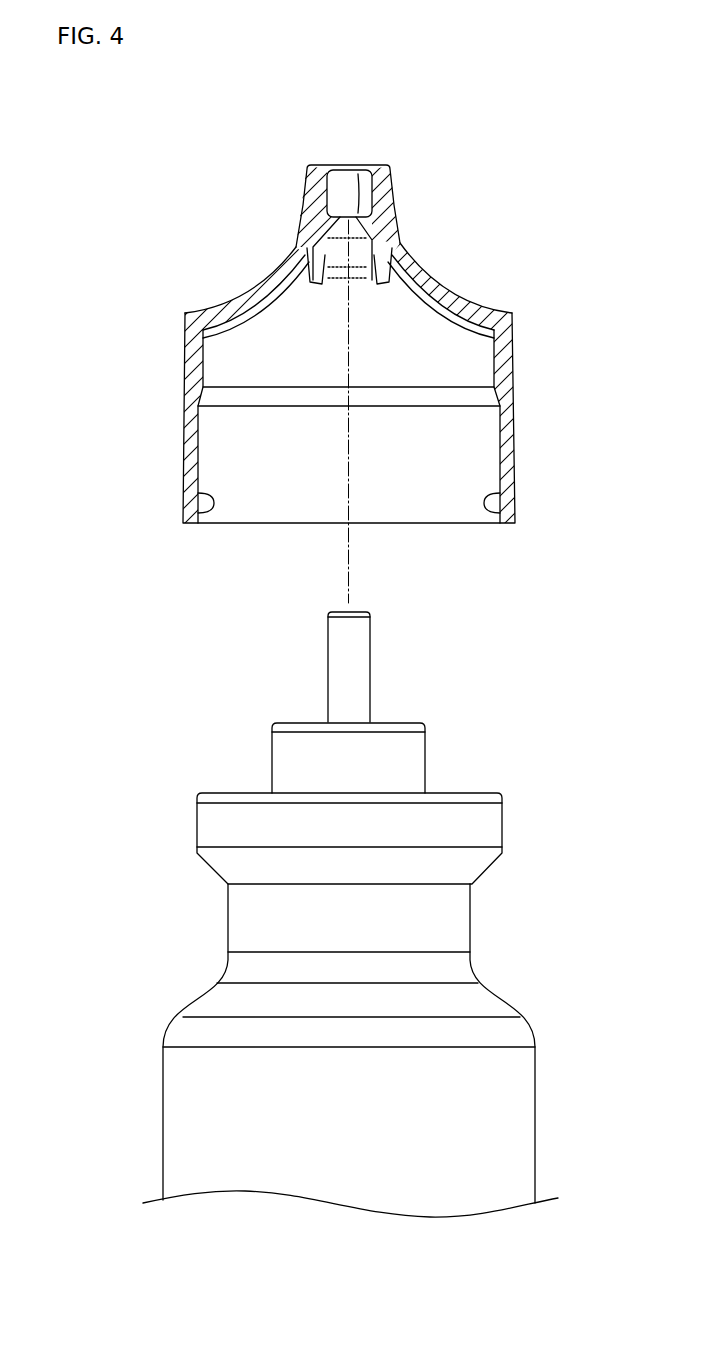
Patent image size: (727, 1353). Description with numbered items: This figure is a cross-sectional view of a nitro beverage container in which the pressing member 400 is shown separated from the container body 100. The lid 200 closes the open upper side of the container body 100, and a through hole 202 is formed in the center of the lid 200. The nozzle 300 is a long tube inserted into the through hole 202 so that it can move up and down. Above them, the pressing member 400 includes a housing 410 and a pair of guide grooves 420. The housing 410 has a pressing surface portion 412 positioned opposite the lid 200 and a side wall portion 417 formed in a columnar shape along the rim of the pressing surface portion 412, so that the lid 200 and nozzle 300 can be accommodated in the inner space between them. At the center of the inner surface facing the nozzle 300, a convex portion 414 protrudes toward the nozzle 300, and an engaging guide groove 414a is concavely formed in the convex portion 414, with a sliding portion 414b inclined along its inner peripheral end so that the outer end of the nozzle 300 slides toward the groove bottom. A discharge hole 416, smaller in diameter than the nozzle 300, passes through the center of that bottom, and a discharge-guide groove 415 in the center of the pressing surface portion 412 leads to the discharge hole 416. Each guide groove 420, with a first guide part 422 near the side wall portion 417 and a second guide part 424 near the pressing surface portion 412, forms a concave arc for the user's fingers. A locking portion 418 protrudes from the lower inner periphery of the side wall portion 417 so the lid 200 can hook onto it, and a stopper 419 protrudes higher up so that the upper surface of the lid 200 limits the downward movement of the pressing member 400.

The container body 100 is at (160, 1092).
The lid 200 is at (196, 791).
The through hole 202 is at (371, 720).
The nozzle 300 is at (312, 661).
The pressing member 400 is at (100, 242).
The housing 410 is at (170, 472).
The pressing surface portion 412 is at (381, 165).
The convex portion 414 is at (295, 243).
The engaging guide groove 414a is at (368, 284).
The sliding portion 414b is at (316, 285).
The discharge-guide groove 415 is at (337, 172).
The discharge hole 416 is at (357, 172).
The side wall portion 417 is at (187, 355).
The locking portion 418 is at (212, 523).
The stopper 419 is at (200, 404).
The guide groove 420 is at (246, 289).
The first guide part 422 is at (490, 308).
The second guide part 424 is at (403, 240).